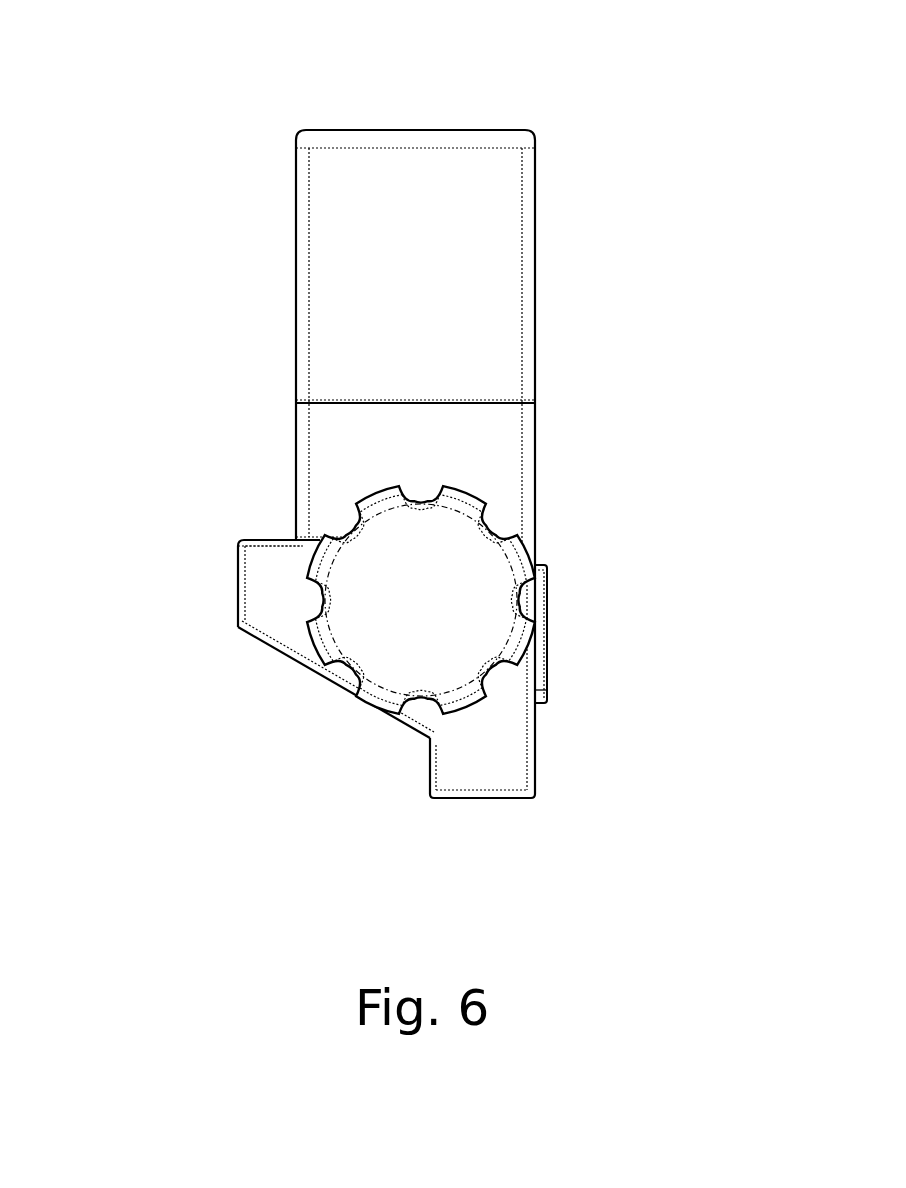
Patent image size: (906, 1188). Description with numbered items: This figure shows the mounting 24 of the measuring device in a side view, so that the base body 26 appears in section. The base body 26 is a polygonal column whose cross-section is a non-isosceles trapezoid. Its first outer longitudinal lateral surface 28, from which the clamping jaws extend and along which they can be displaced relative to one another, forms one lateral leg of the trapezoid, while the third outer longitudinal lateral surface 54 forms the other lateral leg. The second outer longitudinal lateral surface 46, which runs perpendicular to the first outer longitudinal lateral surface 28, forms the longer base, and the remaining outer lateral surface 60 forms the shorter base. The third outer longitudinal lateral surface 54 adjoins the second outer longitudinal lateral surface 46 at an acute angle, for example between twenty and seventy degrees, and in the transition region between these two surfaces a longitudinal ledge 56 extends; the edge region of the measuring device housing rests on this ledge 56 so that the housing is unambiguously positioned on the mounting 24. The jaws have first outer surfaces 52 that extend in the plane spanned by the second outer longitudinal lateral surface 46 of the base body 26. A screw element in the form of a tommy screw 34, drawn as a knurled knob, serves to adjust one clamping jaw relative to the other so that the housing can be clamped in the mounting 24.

The mounting 24 is at (697, 136).
The base body 26 is at (505, 685).
The first outer longitudinal lateral surface 28 is at (268, 540).
The tommy screw 34 is at (445, 607).
The second outer longitudinal lateral surface 46 is at (547, 692).
The first outer surfaces 52 is at (535, 340).
The third outer longitudinal lateral surface 54 is at (300, 667).
The longitudinal ledge 56 is at (483, 766).
The remaining outer lateral surface 60 is at (238, 588).